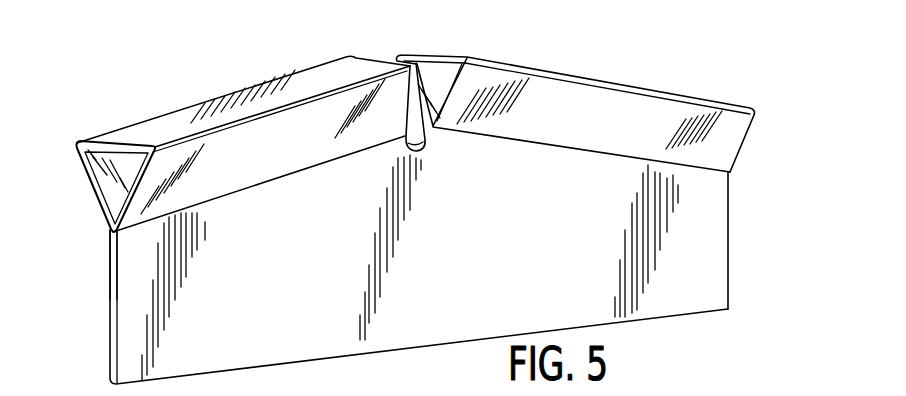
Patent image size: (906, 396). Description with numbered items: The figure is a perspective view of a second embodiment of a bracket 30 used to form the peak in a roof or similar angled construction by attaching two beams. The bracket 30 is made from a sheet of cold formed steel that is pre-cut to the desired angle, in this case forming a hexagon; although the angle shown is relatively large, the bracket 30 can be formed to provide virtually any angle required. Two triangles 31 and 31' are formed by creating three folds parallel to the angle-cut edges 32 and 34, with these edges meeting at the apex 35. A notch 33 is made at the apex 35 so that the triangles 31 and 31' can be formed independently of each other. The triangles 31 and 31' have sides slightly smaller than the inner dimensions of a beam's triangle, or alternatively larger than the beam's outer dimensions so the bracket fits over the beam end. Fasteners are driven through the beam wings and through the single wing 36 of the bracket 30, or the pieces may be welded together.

The bracket 30 is at (748, 235).
The triangle 31 is at (243, 144).
The triangle 31' is at (576, 108).
The angle-cut edge 32 is at (262, 180).
The notch 33 is at (421, 151).
The angle-cut edge 34 is at (556, 148).
The apex 35 is at (108, 233).
The single wing 36 is at (700, 298).